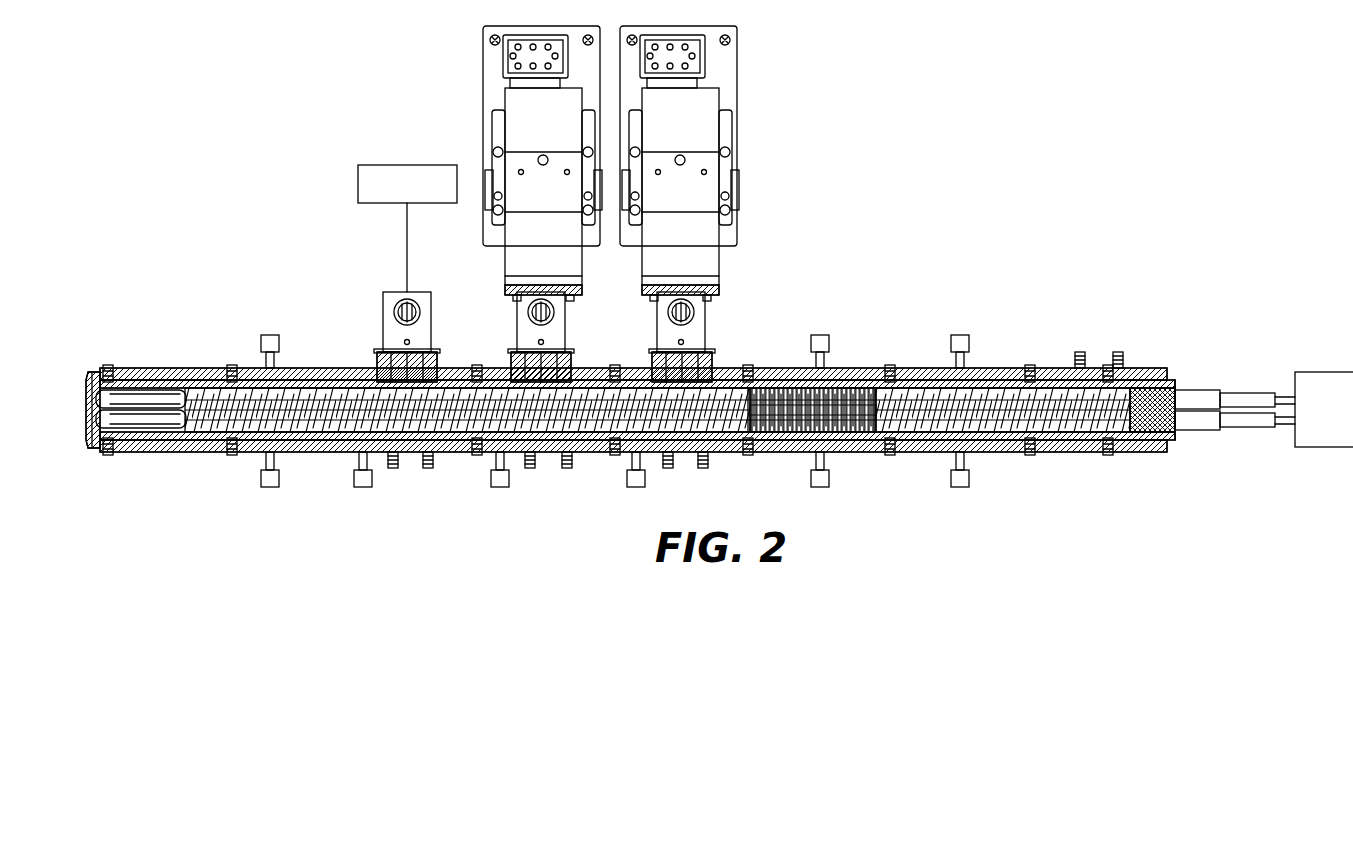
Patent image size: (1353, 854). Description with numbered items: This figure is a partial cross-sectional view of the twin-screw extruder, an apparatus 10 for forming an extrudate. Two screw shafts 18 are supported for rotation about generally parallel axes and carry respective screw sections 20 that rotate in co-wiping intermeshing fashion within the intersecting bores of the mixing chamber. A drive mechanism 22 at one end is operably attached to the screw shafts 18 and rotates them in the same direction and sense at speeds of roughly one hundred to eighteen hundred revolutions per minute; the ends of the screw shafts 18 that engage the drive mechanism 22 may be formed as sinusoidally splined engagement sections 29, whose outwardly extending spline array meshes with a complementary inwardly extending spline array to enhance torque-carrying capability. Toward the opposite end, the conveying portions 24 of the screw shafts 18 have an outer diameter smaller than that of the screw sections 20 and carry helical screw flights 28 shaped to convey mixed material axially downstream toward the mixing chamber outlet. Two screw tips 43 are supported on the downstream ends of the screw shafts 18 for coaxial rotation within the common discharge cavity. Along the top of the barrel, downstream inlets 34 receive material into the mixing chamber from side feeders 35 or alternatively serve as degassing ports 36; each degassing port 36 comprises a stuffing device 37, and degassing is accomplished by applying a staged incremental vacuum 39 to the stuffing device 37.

The apparatus 10 is at (1086, 308).
The screw shafts 18 is at (1088, 376).
The screw sections 20 is at (346, 390).
The drive mechanism 22 is at (1338, 447).
The conveying portions 24 is at (150, 404).
The helical screw flights 28 is at (232, 382).
The sinusoidally splined engagement sections 29 is at (1215, 420).
The downstream inlets 34 is at (437, 364).
The side feeders 35 is at (695, 115).
The degassing ports 36 is at (582, 343).
The stuffing device 37 is at (383, 312).
The staged incremental vacuum 39 is at (375, 165).
The screw tips 43 is at (90, 448).